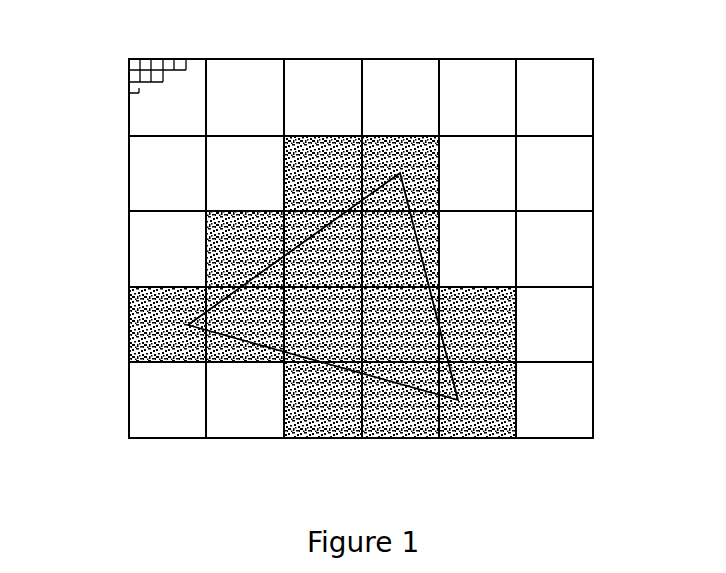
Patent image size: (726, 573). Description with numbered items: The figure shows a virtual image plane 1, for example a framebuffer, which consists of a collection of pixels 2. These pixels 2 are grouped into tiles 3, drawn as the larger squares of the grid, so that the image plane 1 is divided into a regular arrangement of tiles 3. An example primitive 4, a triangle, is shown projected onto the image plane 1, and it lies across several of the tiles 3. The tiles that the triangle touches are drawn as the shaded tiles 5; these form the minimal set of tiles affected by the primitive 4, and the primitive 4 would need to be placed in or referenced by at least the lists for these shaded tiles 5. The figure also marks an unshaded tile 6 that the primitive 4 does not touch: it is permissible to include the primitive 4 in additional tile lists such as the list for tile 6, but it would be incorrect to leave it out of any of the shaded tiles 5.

The virtual image plane 1 is at (125, 99).
The pixels 2 is at (163, 59).
The tiles 3 is at (243, 97).
The primitive 4 is at (400, 173).
The shaded tiles 5 is at (480, 400).
The tile 6 is at (248, 402).